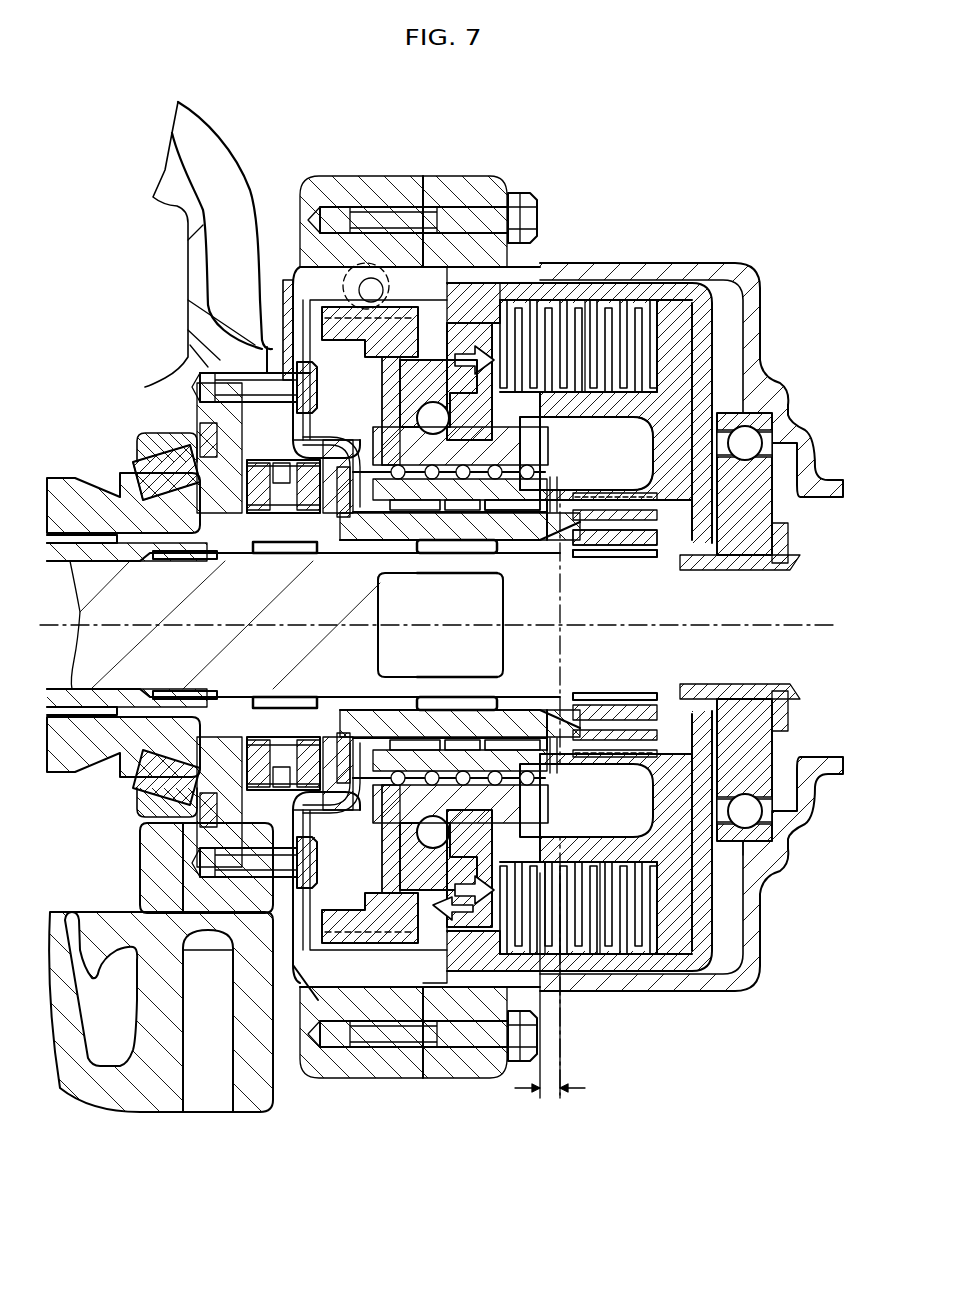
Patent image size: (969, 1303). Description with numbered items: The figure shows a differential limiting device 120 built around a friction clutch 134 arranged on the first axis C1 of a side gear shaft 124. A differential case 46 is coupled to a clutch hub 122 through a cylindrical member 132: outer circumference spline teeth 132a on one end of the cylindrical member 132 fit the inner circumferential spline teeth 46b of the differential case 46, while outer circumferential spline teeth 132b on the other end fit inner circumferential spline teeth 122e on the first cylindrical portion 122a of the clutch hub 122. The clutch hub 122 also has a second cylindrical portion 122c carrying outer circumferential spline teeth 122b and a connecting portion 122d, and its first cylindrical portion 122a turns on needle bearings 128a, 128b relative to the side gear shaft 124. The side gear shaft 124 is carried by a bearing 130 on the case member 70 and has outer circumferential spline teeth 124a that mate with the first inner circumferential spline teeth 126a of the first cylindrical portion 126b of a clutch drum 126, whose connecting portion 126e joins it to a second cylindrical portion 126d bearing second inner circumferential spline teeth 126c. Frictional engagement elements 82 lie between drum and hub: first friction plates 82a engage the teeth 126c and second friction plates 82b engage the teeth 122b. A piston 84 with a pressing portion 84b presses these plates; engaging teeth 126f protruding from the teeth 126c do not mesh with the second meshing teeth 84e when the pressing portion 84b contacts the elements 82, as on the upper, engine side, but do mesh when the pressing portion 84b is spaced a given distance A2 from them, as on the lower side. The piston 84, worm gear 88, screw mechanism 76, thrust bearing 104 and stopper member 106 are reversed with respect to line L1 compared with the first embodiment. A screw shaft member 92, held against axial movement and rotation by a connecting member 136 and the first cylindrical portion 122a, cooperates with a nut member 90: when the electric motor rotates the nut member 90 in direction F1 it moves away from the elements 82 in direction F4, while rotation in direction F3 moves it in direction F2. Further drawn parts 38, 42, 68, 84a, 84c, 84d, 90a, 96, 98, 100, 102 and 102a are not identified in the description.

The case member 38 is at (190, 252).
The tapered roller bearing 42 is at (150, 478).
The differential case 46 is at (95, 487).
The inner circumferential spline teeth 46b is at (92, 700).
The partition wall 68 is at (284, 380).
The case member 70 is at (393, 190).
The screw mechanism 76 is at (583, 466).
The frictional engagement elements 82 is at (675, 298).
The first friction plates 82a is at (540, 958).
The second friction plates 82b is at (620, 390).
The piston 84 is at (422, 932).
The piston inner portion 84a is at (375, 715).
The pressing portion 84b is at (400, 878).
The piston seal ring 84c is at (405, 848).
The piston hub seal 84d is at (490, 395).
The second meshing teeth 84e is at (500, 300).
The worm gear 88 is at (290, 285).
The nut member 90 is at (478, 475).
The bolt 90a is at (382, 381).
The screw shaft member 92 is at (415, 512).
The oil passage member 96 is at (384, 470).
The thrust bearing 98 is at (510, 512).
The hydraulic chamber 100 is at (315, 287).
The housing 102 is at (302, 1035).
The housing block 102a is at (352, 912).
The thrust bearing 104 is at (395, 838).
The stopper member 106 is at (505, 680).
The differential limiting device 120 is at (622, 223).
The clutch hub 122 is at (640, 806).
The first cylindrical portion 122a is at (530, 770).
The outer circumferential spline teeth 122b is at (545, 862).
The second cylindrical portion 122c is at (600, 862).
The connecting portion 122d is at (700, 770).
The inner circumferential spline teeth 122e is at (552, 510).
The side gear shaft 124 is at (385, 642).
The outer circumferential spline teeth 124a is at (612, 555).
The clutch drum 126 is at (745, 266).
The first inner circumferential spline teeth 126a is at (565, 735).
The first cylindrical portion 126b is at (678, 688).
The second inner circumferential spline teeth 126c is at (585, 298).
The second cylindrical portion 126d is at (445, 1012).
The connecting portion 126e is at (735, 845).
The engaging teeth 126f is at (490, 225).
The needle bearing 128a is at (287, 553).
The needle bearing 128b is at (470, 553).
The bearing 130 is at (748, 450).
The cylindrical member 132 is at (345, 548).
The outer circumference spline teeth 132a is at (98, 540).
The outer circumferential spline teeth 132b is at (650, 558).
The friction clutch 134 is at (437, 300).
The connecting member 136 is at (385, 390).
The first axis C1 is at (230, 620).
The line L1 is at (562, 668).
The given distance A2 is at (550, 999).
The arrow F1 is at (600, 600).
The arrow F2 is at (455, 377).
The arrow F3 is at (472, 592).
The arrow F4 is at (450, 925).